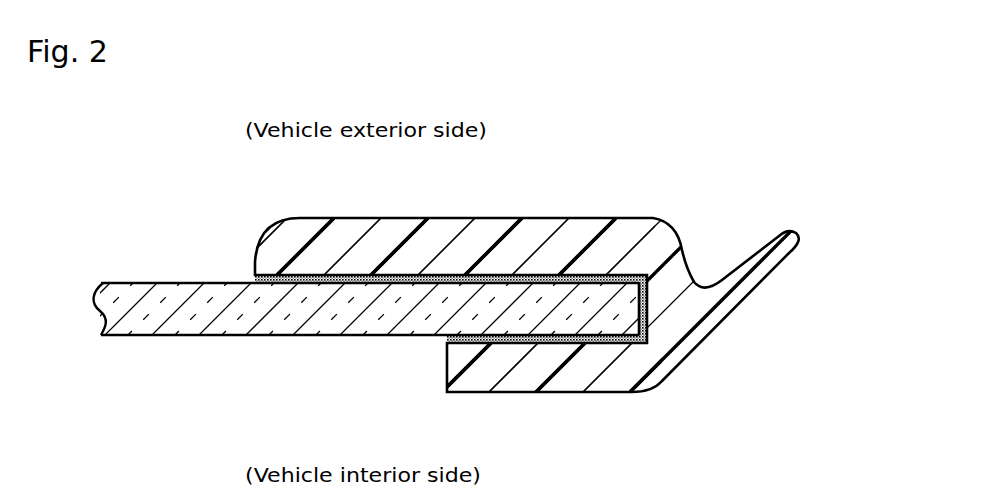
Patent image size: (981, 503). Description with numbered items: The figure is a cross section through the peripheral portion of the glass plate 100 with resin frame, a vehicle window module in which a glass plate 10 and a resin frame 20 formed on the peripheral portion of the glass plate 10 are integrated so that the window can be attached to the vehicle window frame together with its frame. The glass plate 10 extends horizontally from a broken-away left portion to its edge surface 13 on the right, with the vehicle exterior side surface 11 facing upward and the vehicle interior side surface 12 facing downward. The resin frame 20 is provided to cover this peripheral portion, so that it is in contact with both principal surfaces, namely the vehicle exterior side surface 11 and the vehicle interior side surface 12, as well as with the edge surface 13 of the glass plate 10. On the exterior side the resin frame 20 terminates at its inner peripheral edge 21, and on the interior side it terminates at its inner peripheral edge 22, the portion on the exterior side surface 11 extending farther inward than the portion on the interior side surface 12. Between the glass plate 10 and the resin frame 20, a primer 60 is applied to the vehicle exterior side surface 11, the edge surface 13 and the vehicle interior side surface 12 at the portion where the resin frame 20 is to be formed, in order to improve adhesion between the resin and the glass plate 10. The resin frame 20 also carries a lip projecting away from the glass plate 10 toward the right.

The glass plate with resin frame 100 is at (728, 160).
The glass plate 10 is at (125, 309).
The vehicle exterior side surface 11 is at (176, 282).
The vehicle interior side surface 12 is at (176, 337).
The edge surface 13 is at (643, 308).
The resin frame 20 is at (540, 372).
The inner peripheral edge on the vehicle exterior side 21 is at (272, 231).
The inner peripheral edge on the vehicle interior side 22 is at (446, 370).
The primer 60 is at (527, 280).